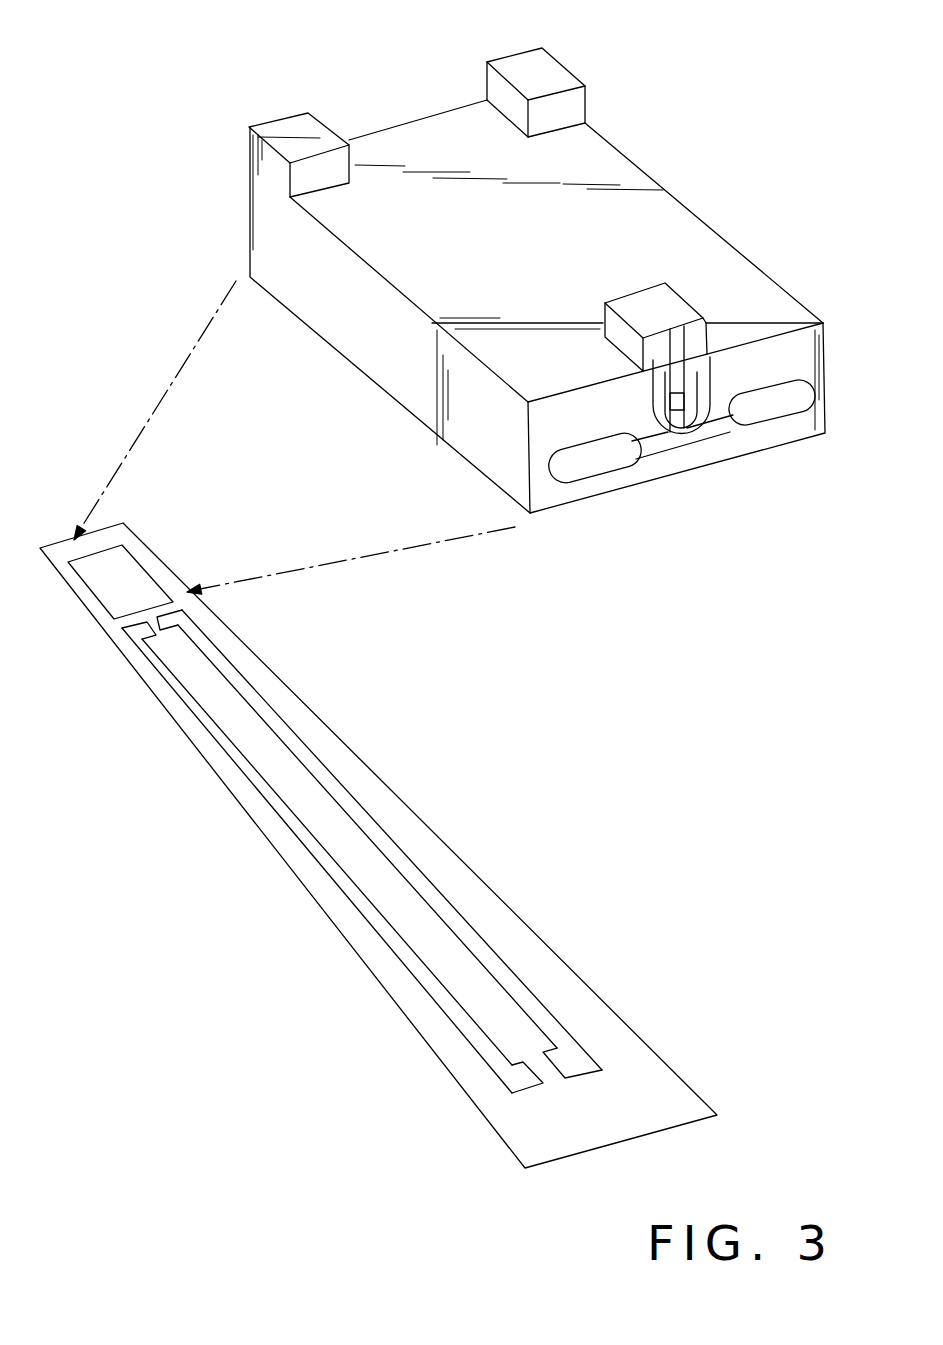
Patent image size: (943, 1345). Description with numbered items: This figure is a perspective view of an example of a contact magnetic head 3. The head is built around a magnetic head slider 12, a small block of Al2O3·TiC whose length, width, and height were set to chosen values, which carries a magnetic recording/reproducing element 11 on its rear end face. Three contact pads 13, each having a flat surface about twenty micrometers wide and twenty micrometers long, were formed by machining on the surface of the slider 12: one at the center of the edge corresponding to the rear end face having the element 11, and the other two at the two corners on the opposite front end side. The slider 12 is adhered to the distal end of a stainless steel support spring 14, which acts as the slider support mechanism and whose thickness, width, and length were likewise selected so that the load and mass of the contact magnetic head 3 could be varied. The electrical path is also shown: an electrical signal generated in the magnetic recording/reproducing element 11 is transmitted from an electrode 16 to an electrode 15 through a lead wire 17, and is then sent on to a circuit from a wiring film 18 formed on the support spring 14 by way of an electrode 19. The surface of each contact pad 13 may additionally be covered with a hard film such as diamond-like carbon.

The contact magnetic head 3 is at (445, 1148).
The magnetic recording/reproducing element 11 is at (703, 450).
The magnetic head slider 12 is at (270, 258).
The contact pad 13 is at (293, 125).
The support spring 14 is at (533, 948).
The electrode 15 is at (143, 630).
The electrode 16 is at (585, 475).
The lead wire 17 is at (593, 462).
The wiring film 18 is at (368, 812).
The electrode 19 is at (573, 1058).